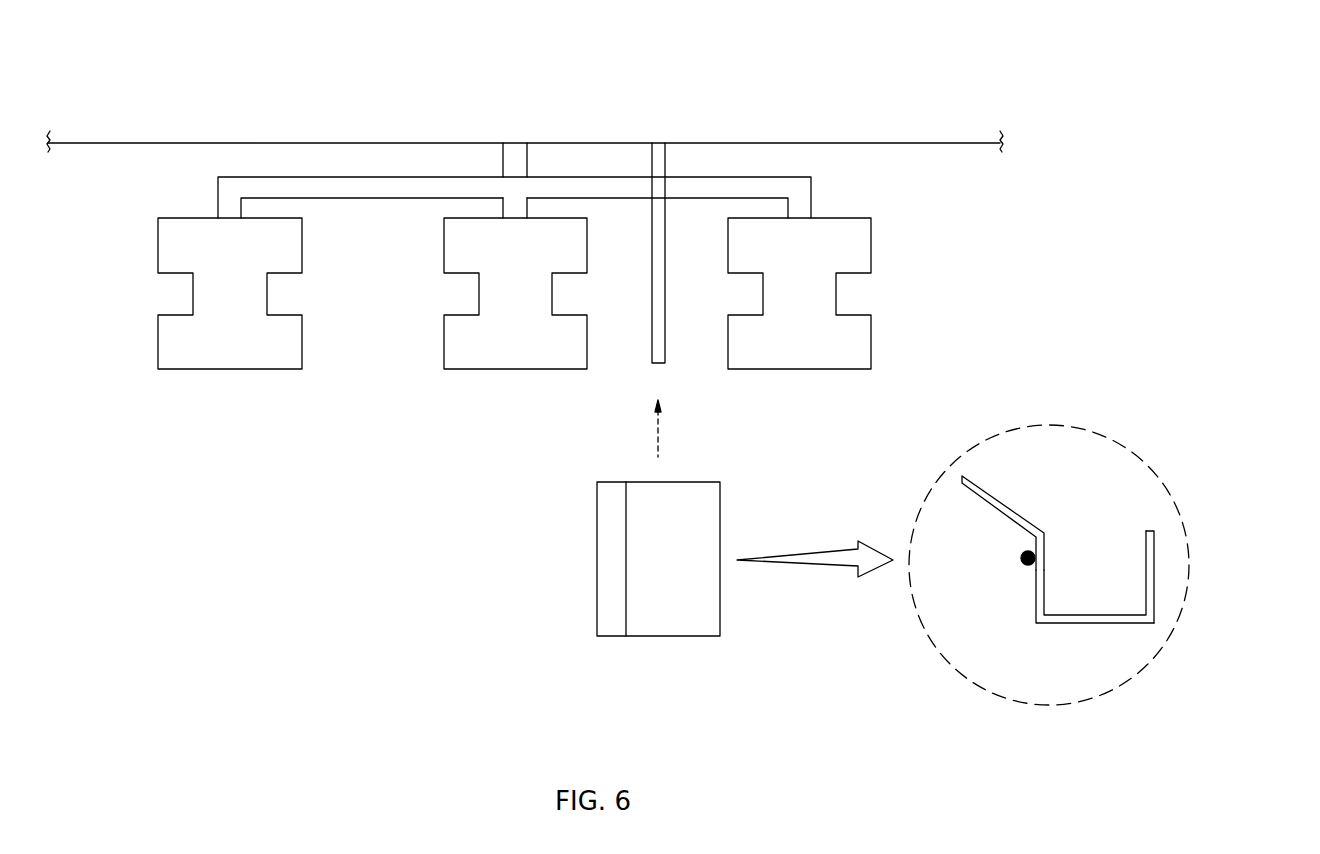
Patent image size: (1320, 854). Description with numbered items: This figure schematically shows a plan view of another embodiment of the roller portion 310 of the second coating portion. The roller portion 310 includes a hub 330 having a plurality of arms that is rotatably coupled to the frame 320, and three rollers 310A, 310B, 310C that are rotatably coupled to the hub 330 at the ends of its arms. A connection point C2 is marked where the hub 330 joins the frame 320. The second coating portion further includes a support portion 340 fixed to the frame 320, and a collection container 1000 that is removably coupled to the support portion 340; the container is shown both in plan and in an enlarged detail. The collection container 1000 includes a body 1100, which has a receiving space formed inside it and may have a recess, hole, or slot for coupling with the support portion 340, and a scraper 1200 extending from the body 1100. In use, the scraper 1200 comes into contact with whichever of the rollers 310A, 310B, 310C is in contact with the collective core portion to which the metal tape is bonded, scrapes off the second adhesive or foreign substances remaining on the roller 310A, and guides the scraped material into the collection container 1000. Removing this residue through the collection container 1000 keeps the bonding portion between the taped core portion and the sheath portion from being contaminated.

The frame 320 is at (927, 141).
The hub 330 is at (345, 187).
The connection portion C2 is at (515, 156).
The support portion 340 is at (668, 243).
The roller portion 310 is at (500, 356).
The roller 310A is at (493, 371).
The roller 310B is at (210, 371).
The roller 310C is at (797, 372).
The collection container 1000 is at (728, 627).
The body 1100 is at (1100, 625).
The scraper 1200 is at (1010, 497).